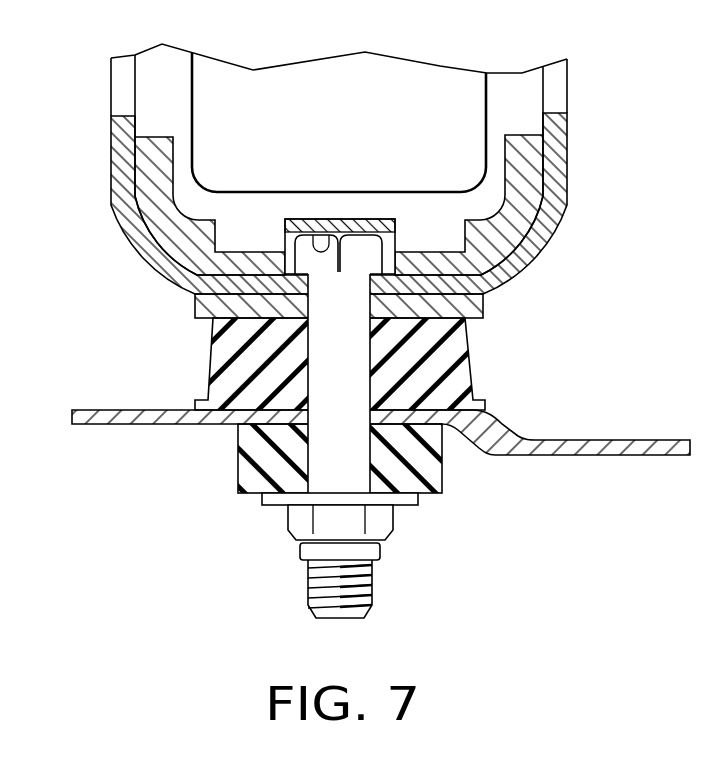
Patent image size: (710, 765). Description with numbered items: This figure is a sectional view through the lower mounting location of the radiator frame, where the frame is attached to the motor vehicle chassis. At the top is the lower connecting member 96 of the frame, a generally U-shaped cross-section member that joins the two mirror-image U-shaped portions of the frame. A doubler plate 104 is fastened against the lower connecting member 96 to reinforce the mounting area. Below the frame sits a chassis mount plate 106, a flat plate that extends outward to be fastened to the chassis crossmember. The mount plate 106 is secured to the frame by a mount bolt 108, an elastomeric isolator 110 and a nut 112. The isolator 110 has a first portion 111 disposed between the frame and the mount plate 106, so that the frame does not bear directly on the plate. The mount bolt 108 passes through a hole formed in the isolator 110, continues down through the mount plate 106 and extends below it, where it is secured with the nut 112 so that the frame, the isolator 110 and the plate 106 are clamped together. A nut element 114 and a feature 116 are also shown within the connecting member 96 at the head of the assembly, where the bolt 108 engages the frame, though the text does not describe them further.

The connecting member 96 is at (167, 162).
The doubler plate 104 is at (486, 305).
The chassis mount plate 106 is at (155, 425).
The mount bolt 108 is at (308, 590).
The elastomeric isolator 110 is at (211, 350).
The first portion of isolator 111 is at (474, 376).
The nut 112 is at (288, 523).
The threaded insert 114 is at (358, 245).
The insert recess 116 is at (330, 233).